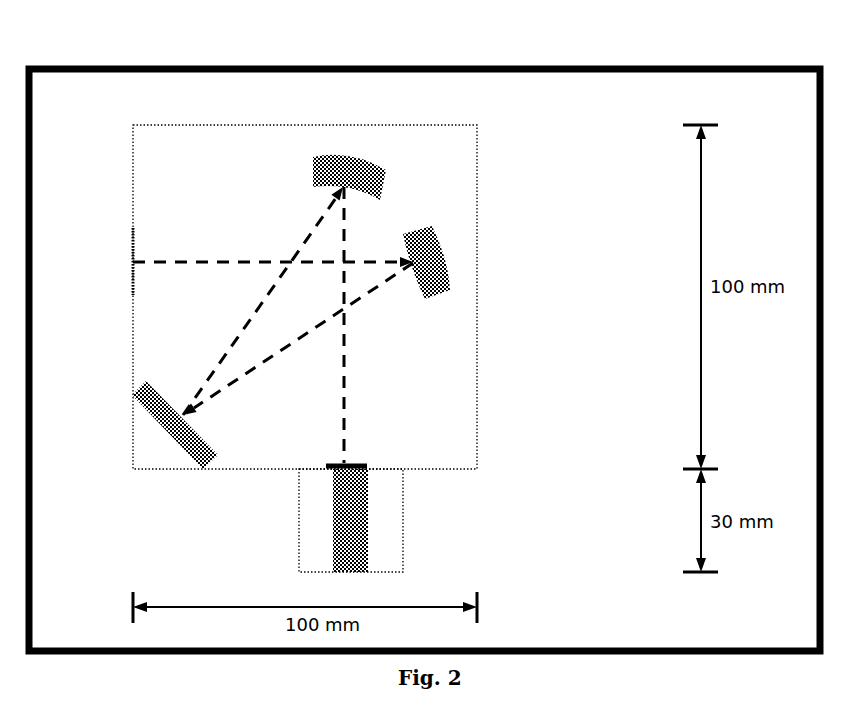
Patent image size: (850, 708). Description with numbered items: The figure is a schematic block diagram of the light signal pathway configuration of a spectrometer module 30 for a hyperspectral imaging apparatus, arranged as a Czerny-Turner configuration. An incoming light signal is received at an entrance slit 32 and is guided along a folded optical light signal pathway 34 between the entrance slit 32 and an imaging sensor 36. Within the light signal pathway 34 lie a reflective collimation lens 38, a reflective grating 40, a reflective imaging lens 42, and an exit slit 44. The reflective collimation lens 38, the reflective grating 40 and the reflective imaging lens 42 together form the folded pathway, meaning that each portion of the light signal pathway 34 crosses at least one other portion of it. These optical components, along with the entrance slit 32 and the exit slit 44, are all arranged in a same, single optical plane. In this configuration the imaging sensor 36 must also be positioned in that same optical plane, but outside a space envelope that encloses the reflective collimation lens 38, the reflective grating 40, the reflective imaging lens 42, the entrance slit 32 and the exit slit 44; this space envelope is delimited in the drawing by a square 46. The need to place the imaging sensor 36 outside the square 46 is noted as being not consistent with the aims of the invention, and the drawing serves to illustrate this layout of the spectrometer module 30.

The spectrometer module 30 is at (102, 65).
The entrance slit 32 is at (132, 262).
The light signal pathway 34 is at (220, 362).
The imaging sensor 36 is at (302, 508).
The reflective collimation lens 38 is at (433, 249).
The reflective grating 40 is at (160, 417).
The reflective imaging lens 42 is at (363, 170).
The exit slit 44 is at (357, 463).
The square 46 is at (132, 184).